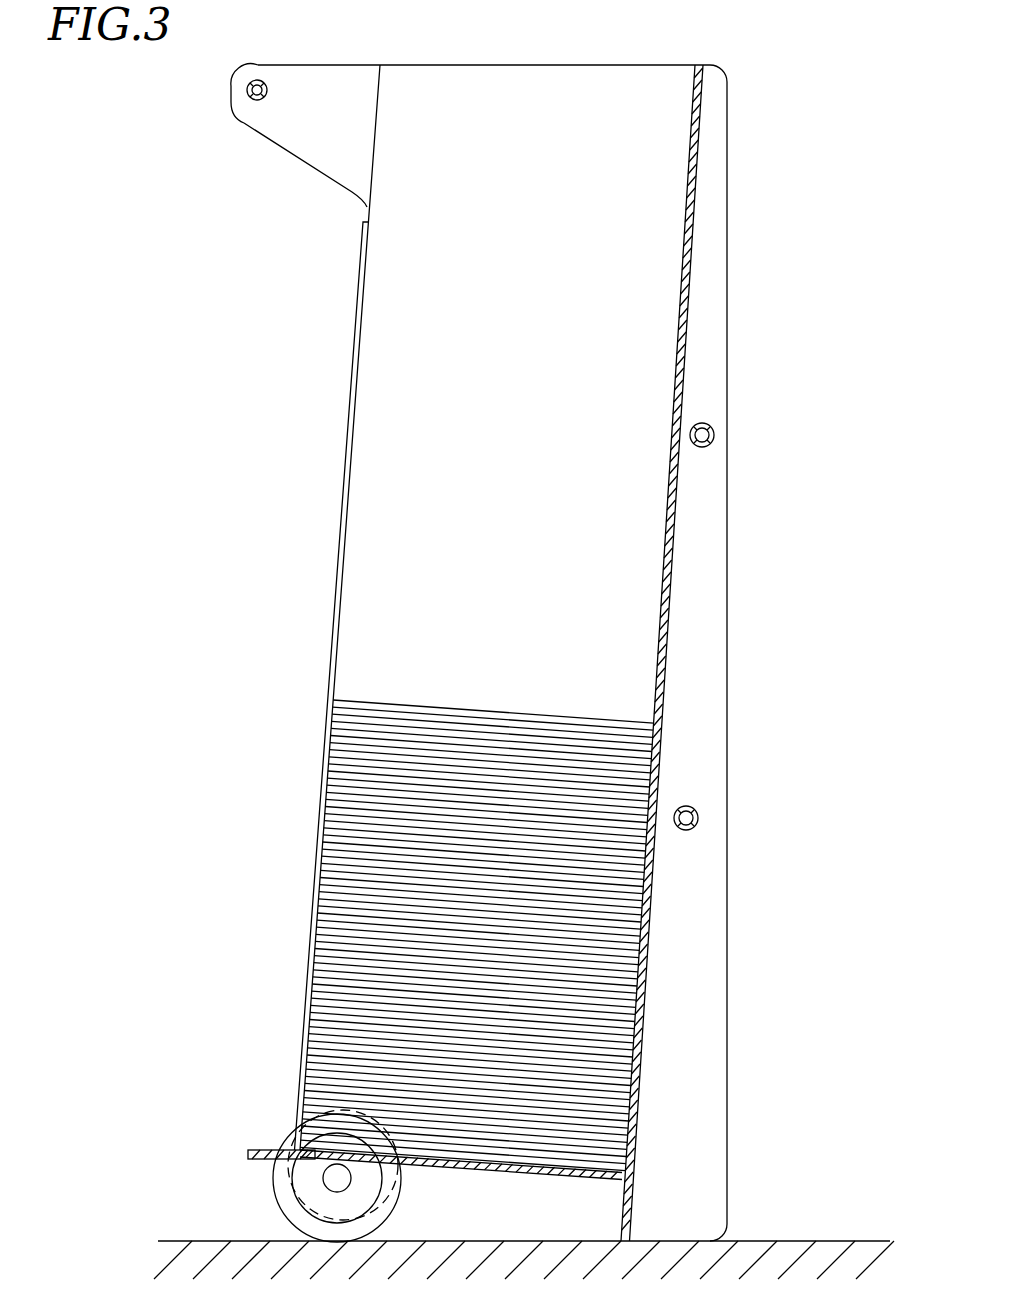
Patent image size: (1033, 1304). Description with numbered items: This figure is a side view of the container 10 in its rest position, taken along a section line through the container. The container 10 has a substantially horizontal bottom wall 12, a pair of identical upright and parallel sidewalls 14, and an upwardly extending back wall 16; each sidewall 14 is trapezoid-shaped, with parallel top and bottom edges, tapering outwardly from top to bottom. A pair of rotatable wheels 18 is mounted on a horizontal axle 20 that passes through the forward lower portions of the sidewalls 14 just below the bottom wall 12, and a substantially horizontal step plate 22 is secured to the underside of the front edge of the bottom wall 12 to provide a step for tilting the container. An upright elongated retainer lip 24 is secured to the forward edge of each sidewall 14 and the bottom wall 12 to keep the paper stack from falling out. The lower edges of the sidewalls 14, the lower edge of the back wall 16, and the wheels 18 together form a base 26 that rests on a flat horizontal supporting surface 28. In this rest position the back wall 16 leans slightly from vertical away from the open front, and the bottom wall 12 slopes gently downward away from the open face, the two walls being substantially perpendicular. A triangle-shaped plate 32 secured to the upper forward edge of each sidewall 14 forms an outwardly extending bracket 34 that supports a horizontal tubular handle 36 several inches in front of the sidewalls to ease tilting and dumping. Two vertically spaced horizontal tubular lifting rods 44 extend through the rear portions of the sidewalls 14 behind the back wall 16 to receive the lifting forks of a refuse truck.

The container 10 is at (528, 50).
The bottom wall 12 is at (436, 1176).
The sidewall 14 is at (732, 262).
The back wall 16 is at (690, 262).
The wheel 18 is at (272, 1180).
The axle 20 is at (336, 1180).
The step plate 22 is at (262, 1150).
The retainer lip 24 is at (360, 285).
The base 26 is at (550, 705).
The supporting surface 28 is at (748, 1248).
The triangle-shaped plate 32 is at (293, 152).
The bracket 34 is at (289, 57).
The tubular handle 36 is at (246, 92).
The lifting rod 44 is at (704, 423).